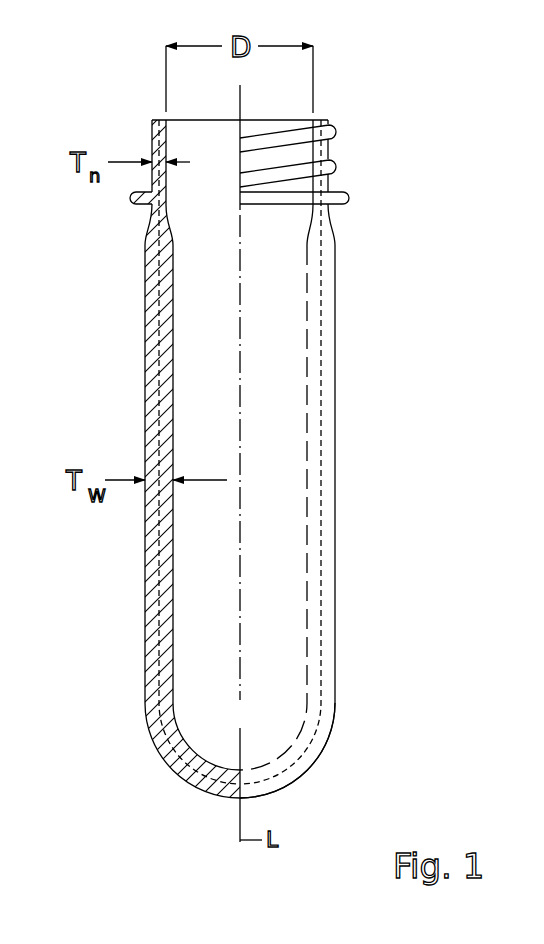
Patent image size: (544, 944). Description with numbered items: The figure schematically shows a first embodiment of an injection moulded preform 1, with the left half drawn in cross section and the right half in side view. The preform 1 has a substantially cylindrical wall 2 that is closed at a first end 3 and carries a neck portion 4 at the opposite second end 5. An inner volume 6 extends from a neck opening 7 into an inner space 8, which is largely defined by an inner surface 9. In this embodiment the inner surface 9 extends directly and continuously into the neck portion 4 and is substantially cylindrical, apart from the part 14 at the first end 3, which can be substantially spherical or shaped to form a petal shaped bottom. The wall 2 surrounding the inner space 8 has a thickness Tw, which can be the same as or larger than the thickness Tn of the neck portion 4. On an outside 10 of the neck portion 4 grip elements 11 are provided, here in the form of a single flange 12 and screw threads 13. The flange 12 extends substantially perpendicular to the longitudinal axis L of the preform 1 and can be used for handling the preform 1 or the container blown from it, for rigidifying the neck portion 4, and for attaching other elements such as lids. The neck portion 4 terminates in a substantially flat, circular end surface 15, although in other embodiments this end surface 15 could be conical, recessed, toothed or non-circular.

The preform 1 is at (357, 440).
The wall 2 is at (272, 408).
The closed first end 3 is at (318, 743).
The neck portion 4 is at (355, 148).
The second end 5 is at (330, 118).
The inner volume 6 is at (216, 440).
The neck opening 7 is at (200, 148).
The inner space 8 is at (203, 532).
The inner surface 9 is at (175, 636).
The outside of the neck portion 10 is at (328, 182).
The grip elements 11 is at (355, 203).
The flange 12 is at (127, 197).
The screw threads 13 is at (340, 130).
The part at the first end 14 is at (183, 730).
The end surface 15 is at (152, 118).